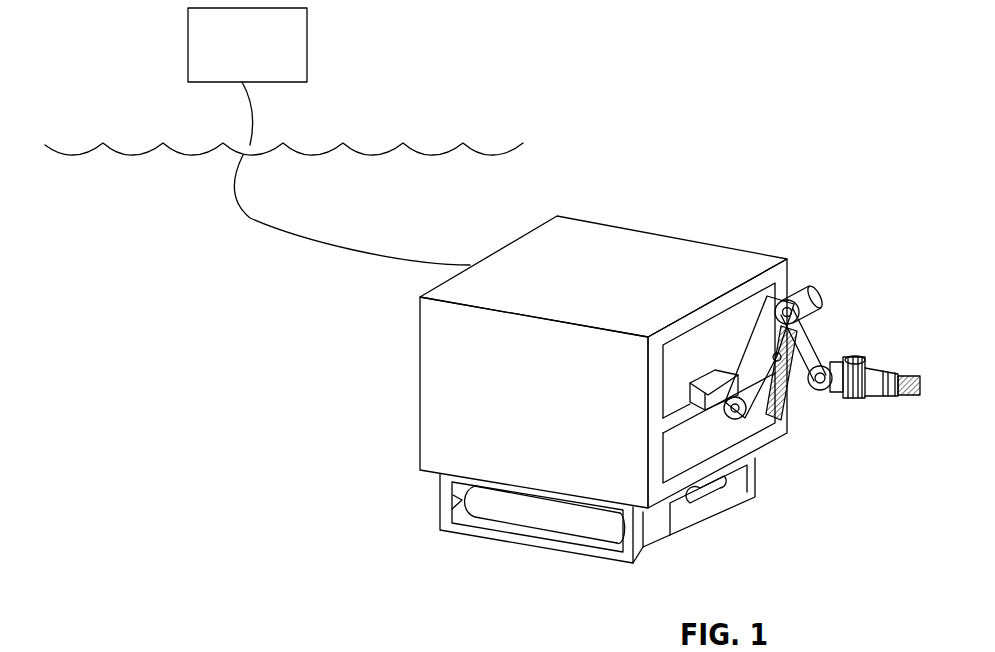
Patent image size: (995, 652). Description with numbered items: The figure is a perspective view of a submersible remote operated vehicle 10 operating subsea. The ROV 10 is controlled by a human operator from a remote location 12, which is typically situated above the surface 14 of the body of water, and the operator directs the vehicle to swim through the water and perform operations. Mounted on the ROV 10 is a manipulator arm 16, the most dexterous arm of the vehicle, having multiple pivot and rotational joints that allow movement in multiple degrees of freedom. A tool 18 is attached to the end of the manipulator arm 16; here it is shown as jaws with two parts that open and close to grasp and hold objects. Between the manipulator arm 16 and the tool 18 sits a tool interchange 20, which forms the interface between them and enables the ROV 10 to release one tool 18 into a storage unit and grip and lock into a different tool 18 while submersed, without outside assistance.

The remote operated vehicle 10 is at (613, 219).
The remote location 12 is at (262, 58).
The surface 14 is at (343, 143).
The manipulator arm 16 is at (800, 292).
The tool 18 is at (881, 385).
The tool interchange 20 is at (870, 397).